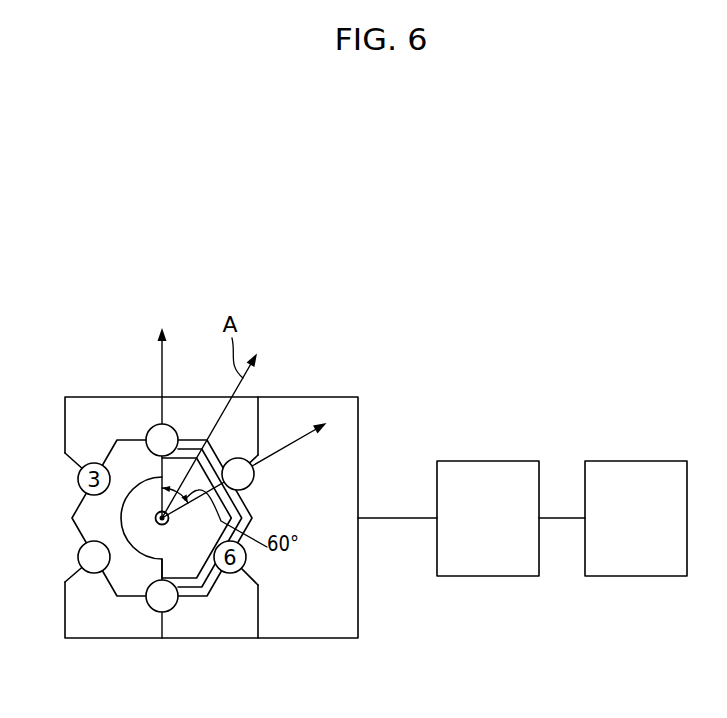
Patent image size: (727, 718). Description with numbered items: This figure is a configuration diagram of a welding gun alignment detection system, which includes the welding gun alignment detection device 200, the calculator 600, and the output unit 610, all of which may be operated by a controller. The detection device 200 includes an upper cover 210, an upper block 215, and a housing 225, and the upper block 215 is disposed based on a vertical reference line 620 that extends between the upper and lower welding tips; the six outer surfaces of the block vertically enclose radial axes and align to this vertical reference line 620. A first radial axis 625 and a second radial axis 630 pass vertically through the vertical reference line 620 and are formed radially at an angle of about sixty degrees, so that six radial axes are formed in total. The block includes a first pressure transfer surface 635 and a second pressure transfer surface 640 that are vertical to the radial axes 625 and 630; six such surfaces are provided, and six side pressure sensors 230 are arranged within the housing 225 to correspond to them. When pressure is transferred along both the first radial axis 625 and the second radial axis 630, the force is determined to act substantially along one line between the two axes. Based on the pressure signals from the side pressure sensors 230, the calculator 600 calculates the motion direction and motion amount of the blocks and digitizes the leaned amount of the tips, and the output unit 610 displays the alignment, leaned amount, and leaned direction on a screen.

The welding gun alignment detection device 200 is at (54, 532).
The upper cover 210 is at (83, 527).
The upper block 215 is at (193, 567).
The housing 225 is at (212, 582).
The side pressure sensor 230 is at (92, 573).
The calculator 600 is at (486, 461).
The output unit 610 is at (633, 461).
The vertical reference line 620 is at (120, 507).
The first radial axis 625 is at (295, 440).
The second radial axis 630 is at (160, 355).
The first pressure transfer surface 635 is at (224, 487).
The second pressure transfer surface 640 is at (188, 458).